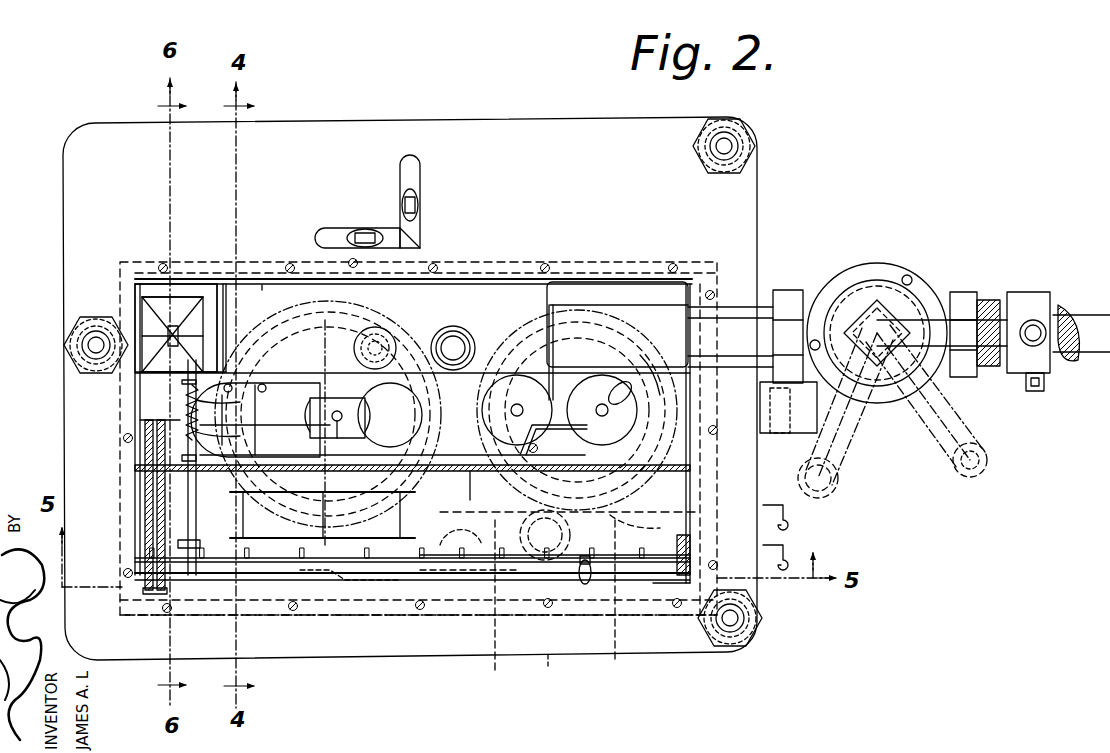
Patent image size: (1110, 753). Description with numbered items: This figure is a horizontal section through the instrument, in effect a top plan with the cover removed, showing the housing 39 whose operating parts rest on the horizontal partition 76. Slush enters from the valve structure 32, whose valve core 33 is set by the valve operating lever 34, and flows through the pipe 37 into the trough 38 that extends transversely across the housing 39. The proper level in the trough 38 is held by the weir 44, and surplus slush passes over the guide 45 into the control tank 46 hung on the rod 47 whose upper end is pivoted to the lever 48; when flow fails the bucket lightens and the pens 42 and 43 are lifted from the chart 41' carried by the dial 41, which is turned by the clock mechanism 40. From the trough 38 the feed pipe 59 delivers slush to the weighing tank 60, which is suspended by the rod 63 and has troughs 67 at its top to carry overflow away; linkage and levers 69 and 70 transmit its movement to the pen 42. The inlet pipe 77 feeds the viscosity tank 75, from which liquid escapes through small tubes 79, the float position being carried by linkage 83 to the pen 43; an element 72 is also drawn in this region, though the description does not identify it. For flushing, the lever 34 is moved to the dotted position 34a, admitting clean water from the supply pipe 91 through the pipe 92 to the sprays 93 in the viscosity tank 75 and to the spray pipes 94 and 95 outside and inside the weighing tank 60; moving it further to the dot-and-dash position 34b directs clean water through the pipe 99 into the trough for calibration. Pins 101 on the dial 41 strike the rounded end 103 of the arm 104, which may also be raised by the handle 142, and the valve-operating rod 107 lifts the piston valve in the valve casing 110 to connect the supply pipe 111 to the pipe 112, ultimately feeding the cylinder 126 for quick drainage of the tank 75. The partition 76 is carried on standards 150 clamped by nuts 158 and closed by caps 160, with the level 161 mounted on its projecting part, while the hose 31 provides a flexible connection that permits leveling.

The hose 31 is at (1073, 362).
The valve structure 32 is at (880, 276).
The valve core 33 is at (644, 356).
The valve operating lever 34 is at (1012, 368).
The dotted line position of lever 34a is at (965, 418).
The dot-and-dash line position of lever 34b is at (855, 420).
The pipe 37 is at (628, 300).
The trough 38 is at (490, 290).
The housing 39 is at (700, 500).
The clock mechanism 40 is at (345, 565).
The dial 41 is at (555, 596).
The chart 41' is at (449, 604).
The pen 42 is at (265, 592).
The pen 43 is at (315, 585).
The weir 44 is at (228, 290).
The guide 45 is at (218, 290).
The control tank 46 is at (168, 305).
The rod 47 is at (150, 306).
The lever 48 is at (140, 372).
The feed pipe 59 is at (378, 332).
The weighing tank 60 is at (140, 423).
The rod 63 is at (280, 425).
The troughs 67 is at (268, 282).
The linkage and levers 69 is at (225, 394).
The linkage and levers 70 is at (145, 498).
The disk 72 is at (602, 410).
The viscosity tank 75 is at (622, 518).
The horizontal partition 76 is at (514, 120).
The inlet pipe 77 is at (446, 330).
The tubes 79 is at (606, 392).
The linkage and levers 83 is at (472, 476).
The pipe 91 is at (1085, 315).
The pipe 92 is at (800, 420).
The sprays 93 is at (655, 494).
The spray pipe 94 is at (285, 523).
The spray pipe 95 is at (310, 431).
The pipe 99 is at (583, 300).
The pins 101 is at (270, 557).
The rounded end 103 is at (540, 580).
The arm 104 is at (632, 560).
The valve-operating rod 107 is at (553, 430).
The valve casing 110 is at (553, 670).
The pipe 111 is at (824, 540).
The pipe 112 is at (820, 523).
The cylinder 126 is at (778, 435).
The handle 142 is at (585, 585).
The standards 150 is at (735, 147).
The nut 158 is at (738, 162).
The caps 160 is at (728, 148).
The level 161 is at (420, 178).